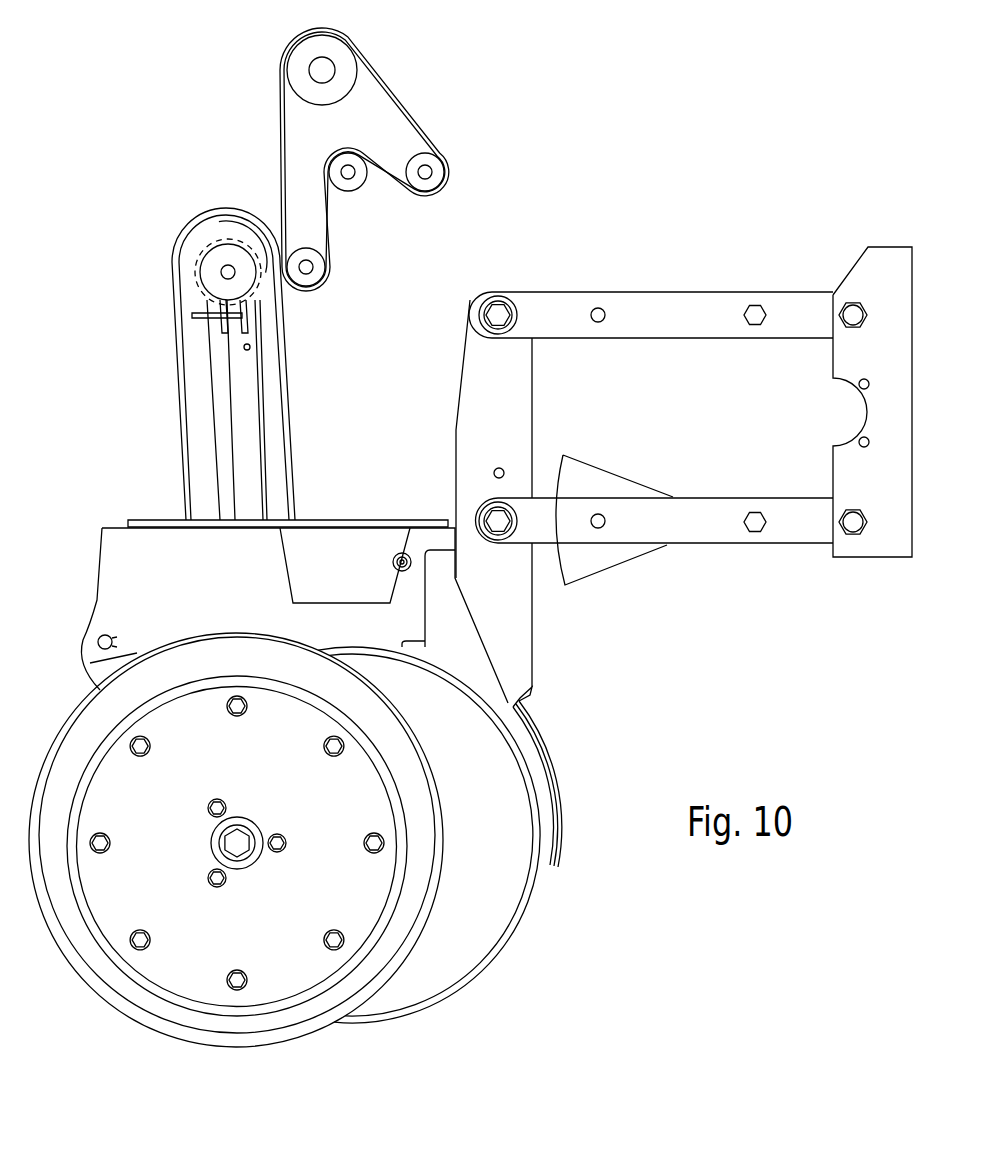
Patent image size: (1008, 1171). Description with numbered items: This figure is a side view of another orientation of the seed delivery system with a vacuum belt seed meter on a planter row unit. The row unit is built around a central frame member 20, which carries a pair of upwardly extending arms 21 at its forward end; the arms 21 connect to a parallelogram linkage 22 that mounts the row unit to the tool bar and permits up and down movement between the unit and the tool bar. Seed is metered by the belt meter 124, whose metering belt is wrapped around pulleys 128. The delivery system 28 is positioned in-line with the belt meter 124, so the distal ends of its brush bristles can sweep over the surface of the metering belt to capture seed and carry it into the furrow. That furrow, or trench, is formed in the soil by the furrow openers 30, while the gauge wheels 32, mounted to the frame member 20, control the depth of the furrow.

The central frame member 20 is at (150, 577).
The upwardly extending arms 21 is at (535, 358).
The parallelogram linkage 22 is at (673, 303).
The seed delivery system 28 is at (210, 207).
The furrow openers 30 is at (503, 955).
The gauge wheels 32 is at (118, 993).
The belt meter 124 is at (393, 97).
The pulleys 128 is at (337, 50).